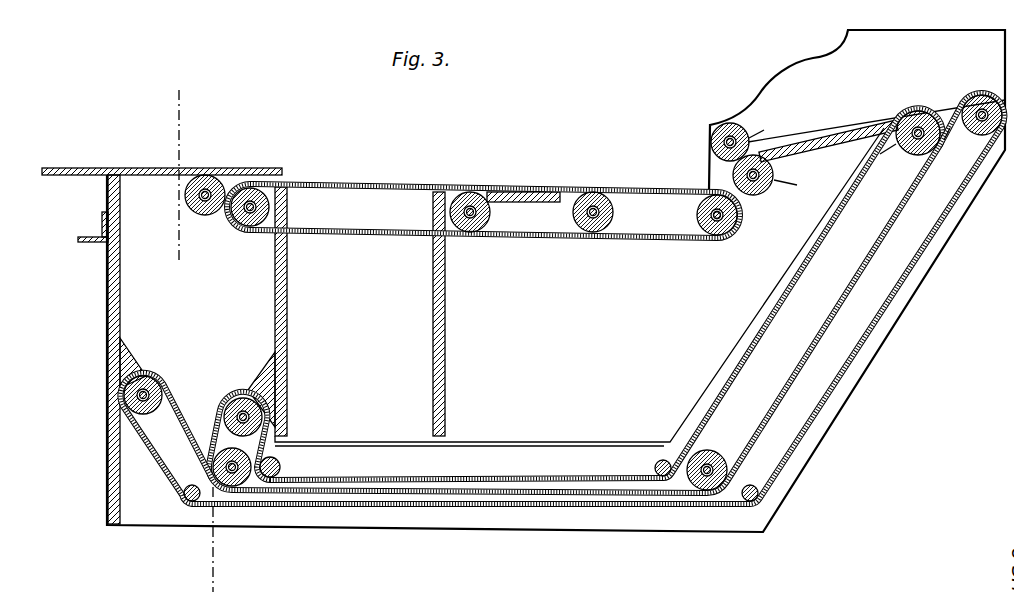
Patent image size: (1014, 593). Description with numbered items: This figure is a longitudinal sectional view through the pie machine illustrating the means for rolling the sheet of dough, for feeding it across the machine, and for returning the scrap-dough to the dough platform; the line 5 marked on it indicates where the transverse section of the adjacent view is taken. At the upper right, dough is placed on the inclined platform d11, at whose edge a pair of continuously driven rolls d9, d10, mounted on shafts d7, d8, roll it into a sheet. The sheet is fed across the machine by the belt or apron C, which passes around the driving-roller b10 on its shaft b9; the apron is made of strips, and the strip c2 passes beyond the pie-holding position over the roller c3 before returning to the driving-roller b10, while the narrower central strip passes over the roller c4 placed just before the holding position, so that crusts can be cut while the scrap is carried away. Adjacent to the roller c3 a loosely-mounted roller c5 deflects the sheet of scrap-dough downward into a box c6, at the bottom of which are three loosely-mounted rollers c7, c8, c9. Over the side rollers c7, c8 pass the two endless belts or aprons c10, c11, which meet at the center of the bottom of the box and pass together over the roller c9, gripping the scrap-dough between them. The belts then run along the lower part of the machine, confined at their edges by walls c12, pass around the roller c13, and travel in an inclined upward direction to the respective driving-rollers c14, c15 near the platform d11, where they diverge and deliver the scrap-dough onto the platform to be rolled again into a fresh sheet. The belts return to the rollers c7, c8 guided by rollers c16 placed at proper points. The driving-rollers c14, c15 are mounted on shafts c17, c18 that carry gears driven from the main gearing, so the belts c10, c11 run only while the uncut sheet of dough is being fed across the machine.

The belt or apron C is at (614, 186).
The strip of the apron c2 is at (527, 188).
The roller c3 is at (245, 228).
The roller c4 is at (472, 235).
The loosely-mounted roller c5 is at (203, 214).
The box c6 is at (523, 312).
The loosely-mounted roller c7 is at (158, 383).
The loosely-mounted roller c8 is at (239, 401).
The loosely-mounted roller c9 is at (251, 461).
The endless belt or apron c10 is at (218, 431).
The endless belt or apron c11 is at (850, 358).
The walls c12 is at (527, 521).
The roller c13 is at (724, 442).
The driving-roller c14 is at (905, 152).
The driving-roller c15 is at (945, 142).
The guide rollers c16 is at (792, 512).
The shaft c17 is at (917, 123).
The shaft c18 is at (978, 100).
The shaft d7 is at (798, 185).
The shaft d8 is at (770, 123).
The roll d9 is at (740, 176).
The roll d10 is at (725, 130).
The inclined platform d11 is at (838, 138).
The shaft b9 is at (740, 217).
The roller b10 is at (713, 239).
The section line 5- 5 is at (181, 341).